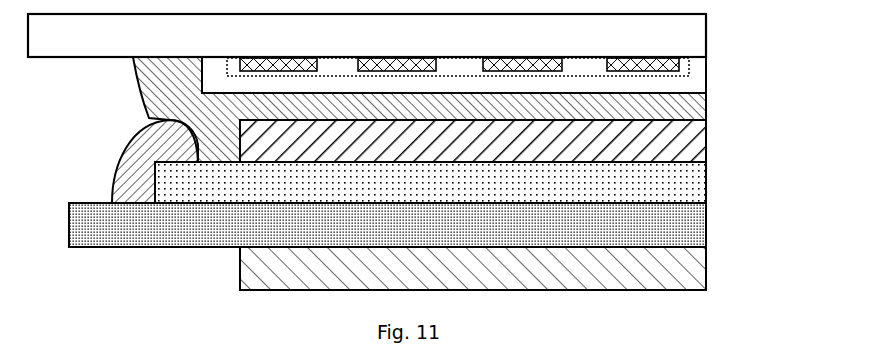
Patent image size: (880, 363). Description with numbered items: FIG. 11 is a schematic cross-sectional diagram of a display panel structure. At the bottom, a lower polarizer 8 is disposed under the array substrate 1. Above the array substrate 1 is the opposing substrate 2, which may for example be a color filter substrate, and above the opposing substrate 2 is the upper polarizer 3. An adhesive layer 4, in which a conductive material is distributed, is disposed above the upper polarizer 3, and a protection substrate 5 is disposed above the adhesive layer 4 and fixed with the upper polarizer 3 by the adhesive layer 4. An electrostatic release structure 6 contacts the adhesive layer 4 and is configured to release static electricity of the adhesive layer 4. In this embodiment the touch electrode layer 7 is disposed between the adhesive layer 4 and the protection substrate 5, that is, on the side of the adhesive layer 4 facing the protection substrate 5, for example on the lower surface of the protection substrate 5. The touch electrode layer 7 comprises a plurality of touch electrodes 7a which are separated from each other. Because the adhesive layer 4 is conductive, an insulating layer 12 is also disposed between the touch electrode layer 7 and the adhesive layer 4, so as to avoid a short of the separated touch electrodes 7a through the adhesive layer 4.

The array substrate 1 is at (706, 223).
The opposing substrate 2 is at (706, 184).
The upper polarizer 3 is at (706, 138).
The adhesive layer 4 is at (688, 108).
The protection substrate 5 is at (706, 32).
The electrostatic release structure 6 is at (117, 165).
The touch electrode layer 7 is at (415, 77).
The touch electrodes 7a is at (255, 62).
The lower polarizer 8 is at (706, 265).
The insulating layer 12 is at (697, 87).